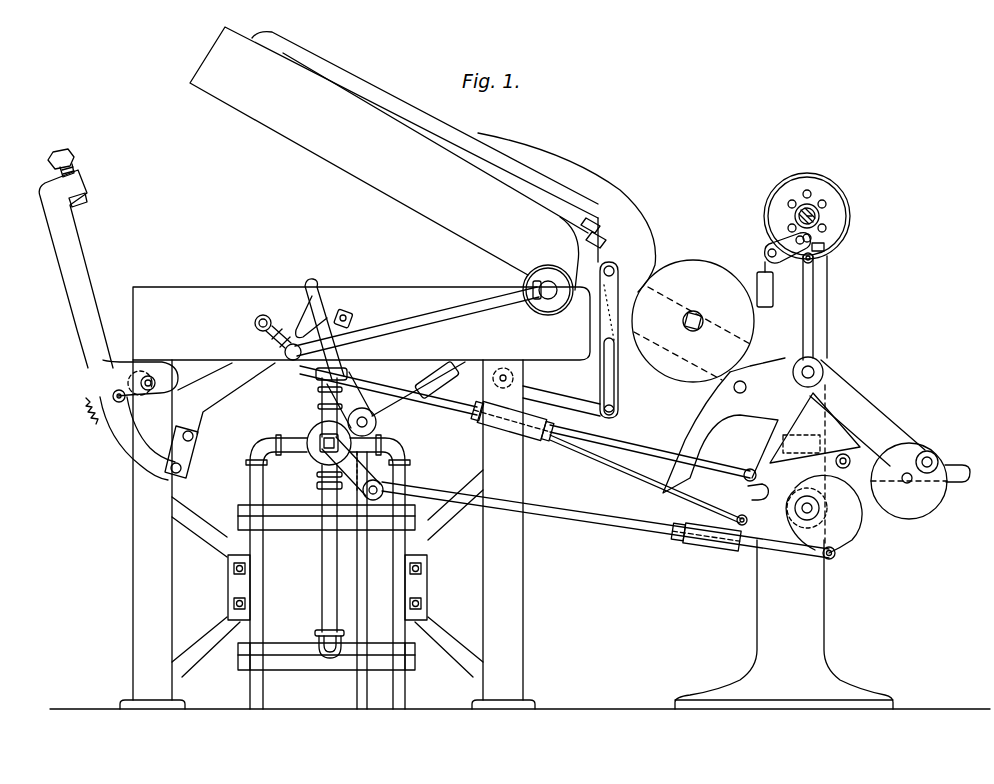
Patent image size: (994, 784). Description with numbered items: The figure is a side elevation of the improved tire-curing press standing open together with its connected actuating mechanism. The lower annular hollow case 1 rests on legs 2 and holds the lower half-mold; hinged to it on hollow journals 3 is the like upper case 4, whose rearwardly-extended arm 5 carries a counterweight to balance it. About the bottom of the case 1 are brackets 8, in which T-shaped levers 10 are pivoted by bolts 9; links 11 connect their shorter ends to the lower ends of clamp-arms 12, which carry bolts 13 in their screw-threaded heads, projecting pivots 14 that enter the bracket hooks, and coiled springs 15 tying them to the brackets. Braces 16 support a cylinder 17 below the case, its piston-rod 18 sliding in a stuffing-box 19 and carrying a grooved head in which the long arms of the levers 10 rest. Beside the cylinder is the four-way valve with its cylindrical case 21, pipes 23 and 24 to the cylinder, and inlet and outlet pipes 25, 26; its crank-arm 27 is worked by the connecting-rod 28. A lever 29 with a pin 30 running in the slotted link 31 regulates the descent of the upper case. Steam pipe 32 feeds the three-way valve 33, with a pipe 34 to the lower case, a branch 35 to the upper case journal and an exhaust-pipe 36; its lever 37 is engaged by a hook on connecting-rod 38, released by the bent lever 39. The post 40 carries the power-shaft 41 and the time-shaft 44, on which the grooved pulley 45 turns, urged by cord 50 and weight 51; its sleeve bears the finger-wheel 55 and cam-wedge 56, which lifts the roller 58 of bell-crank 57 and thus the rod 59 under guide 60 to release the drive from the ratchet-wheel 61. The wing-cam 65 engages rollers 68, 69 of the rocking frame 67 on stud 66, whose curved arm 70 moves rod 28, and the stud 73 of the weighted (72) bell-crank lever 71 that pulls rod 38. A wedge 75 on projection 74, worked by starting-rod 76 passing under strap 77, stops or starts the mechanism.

The annular hollow case 1 is at (361, 312).
The legs 2 is at (323, 534).
The hollow journals 3 is at (545, 268).
The upper annular hollow case 4 is at (423, 159).
The rearwardly-extended arm 5 is at (746, 324).
The brackets 8 is at (102, 383).
The bolts 9 is at (138, 382).
The T-shaped levers 10 is at (226, 398).
The links 11 is at (192, 452).
The clamp-arms 12 is at (76, 269).
The bolts 13 is at (75, 158).
The projecting pivot 14 is at (119, 403).
The coiled spring 15 is at (80, 411).
The braces 16 is at (327, 573).
The cylinder 17 is at (328, 572).
The piston-rod 18 is at (316, 474).
The stuffing-box 19 is at (316, 491).
The cylindrical case 21 is at (312, 432).
The pipe 23 is at (322, 608).
The pipe 24 is at (316, 407).
The inlet pipe 25 is at (407, 683).
The outlet pipe 26 is at (265, 683).
The crank-arm 27 is at (352, 468).
The connecting-rod 28 is at (605, 520).
The lever 29 is at (561, 392).
The pin 30 is at (616, 410).
The slotted link 31 is at (618, 376).
The steam pipe 32 is at (336, 662).
The three-way valve 33 is at (377, 423).
The pipe 34 is at (305, 372).
The branch pipe 35 is at (417, 321).
The exhaust-pipe 36 is at (453, 366).
The lever 37 is at (320, 318).
The connecting-rod 38 is at (476, 412).
The bent lever 39 is at (330, 299).
The post 40 is at (828, 303).
The power-shaft 41 is at (820, 508).
The time-shaft 44 is at (820, 216).
The grooved pulley 45 is at (835, 158).
The cord 50 is at (766, 244).
The weight 51 is at (758, 274).
The finger-wheel 55 is at (809, 209).
The cam-wedge 56 is at (825, 247).
The bell-crank 57 is at (787, 255).
The roller 58 is at (814, 259).
The rod 59 is at (816, 330).
The guide 60 is at (812, 438).
The ratchet-wheel 61 is at (855, 538).
The wing-cam 65 is at (708, 550).
The stud 66 is at (824, 371).
The rocking frame 67 is at (880, 420).
The friction-roller 68 is at (744, 475).
The friction-roller 69 is at (938, 456).
The curved arm 70 is at (834, 557).
The bell-crank lever 71 is at (724, 425).
The weight 72 is at (942, 497).
The stud 73 is at (855, 449).
The projection 74 is at (748, 490).
The wedge 75 is at (740, 510).
The starting-rod 76 is at (650, 474).
The strap 77 is at (355, 319).